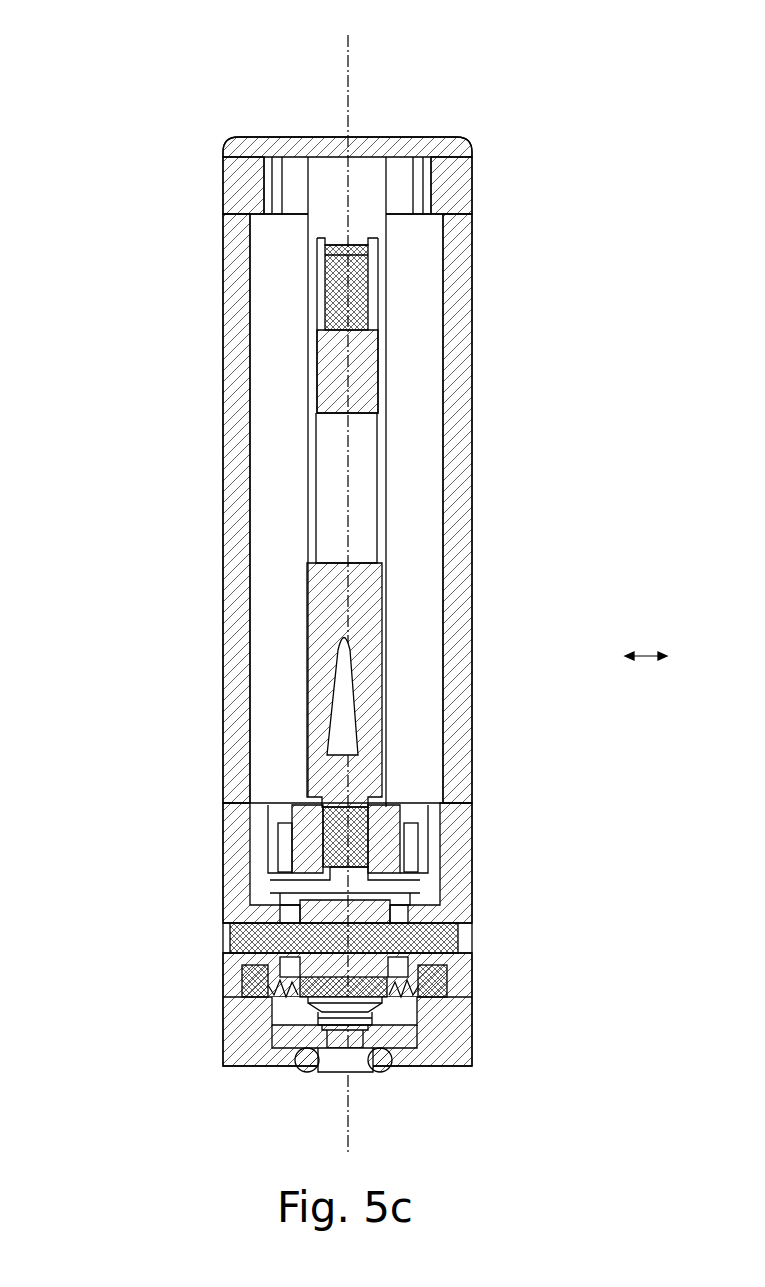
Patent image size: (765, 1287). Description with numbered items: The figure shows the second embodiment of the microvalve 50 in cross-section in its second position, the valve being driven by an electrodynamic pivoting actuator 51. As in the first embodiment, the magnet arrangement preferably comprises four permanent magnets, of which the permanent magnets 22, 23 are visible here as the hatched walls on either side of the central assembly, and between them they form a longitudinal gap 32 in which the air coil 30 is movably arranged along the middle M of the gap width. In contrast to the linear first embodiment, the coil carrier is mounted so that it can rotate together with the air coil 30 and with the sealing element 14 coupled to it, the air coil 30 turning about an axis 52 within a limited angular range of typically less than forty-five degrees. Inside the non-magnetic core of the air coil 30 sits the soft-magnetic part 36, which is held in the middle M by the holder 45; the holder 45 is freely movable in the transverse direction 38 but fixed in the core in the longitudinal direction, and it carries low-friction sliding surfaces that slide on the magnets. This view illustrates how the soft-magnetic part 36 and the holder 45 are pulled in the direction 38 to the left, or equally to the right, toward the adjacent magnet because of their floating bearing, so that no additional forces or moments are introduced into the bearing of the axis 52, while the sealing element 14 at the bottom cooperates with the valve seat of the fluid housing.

The middle of the width of the longitudinal gap M is at (348, 50).
The microvalve 50 is at (152, 110).
The electrodynamic pivoting actuator 51 is at (168, 362).
The longitudinal gap 32 is at (352, 222).
The permanent magnet 22 is at (268, 252).
The permanent magnet 23 is at (440, 368).
The air coil 30 is at (380, 262).
The holder 45 is at (372, 600).
The soft-magnetic part 36 is at (372, 675).
The direction of the transverse force 38 is at (646, 640).
The axis 52 is at (458, 945).
The sealing element 14 is at (292, 1000).